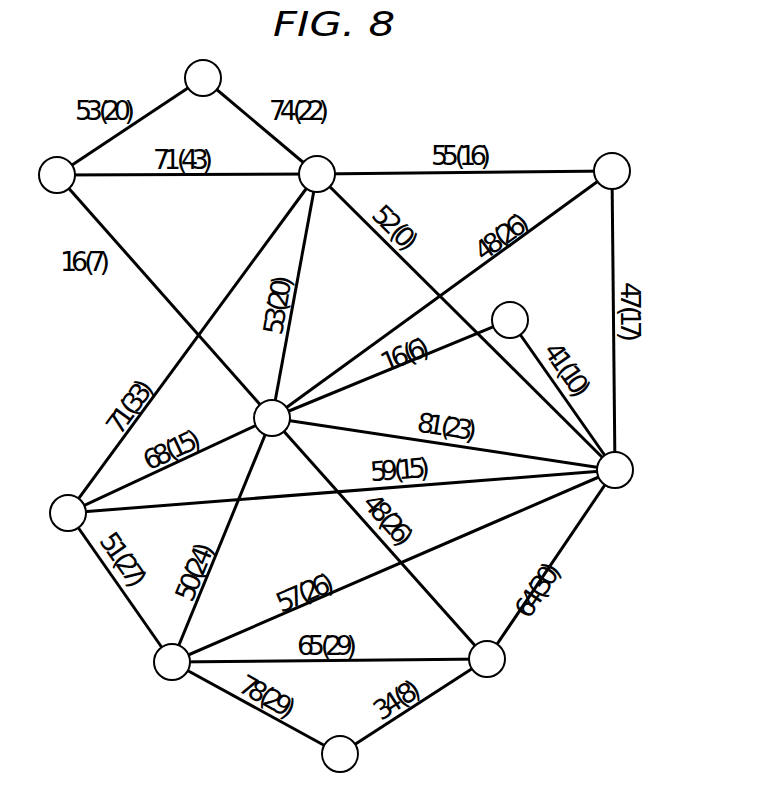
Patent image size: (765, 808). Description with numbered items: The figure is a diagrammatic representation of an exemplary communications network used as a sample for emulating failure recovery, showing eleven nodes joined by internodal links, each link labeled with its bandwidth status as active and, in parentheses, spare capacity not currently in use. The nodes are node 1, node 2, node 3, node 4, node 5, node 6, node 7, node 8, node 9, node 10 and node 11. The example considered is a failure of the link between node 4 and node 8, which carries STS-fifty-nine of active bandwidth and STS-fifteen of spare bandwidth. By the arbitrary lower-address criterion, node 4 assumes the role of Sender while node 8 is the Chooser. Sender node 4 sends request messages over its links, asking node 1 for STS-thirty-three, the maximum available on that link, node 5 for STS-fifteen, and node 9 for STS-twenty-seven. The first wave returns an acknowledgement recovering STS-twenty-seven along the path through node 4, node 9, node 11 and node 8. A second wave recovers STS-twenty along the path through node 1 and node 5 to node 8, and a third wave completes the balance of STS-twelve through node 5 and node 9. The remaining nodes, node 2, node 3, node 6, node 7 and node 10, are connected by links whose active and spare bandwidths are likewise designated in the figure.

The node 1 is at (317, 174).
The node 2 is at (203, 78).
The node 3 is at (57, 175).
The node 4 is at (68, 513).
The node 5 is at (272, 418).
The node 6 is at (612, 171).
The node 7 is at (510, 320).
The node 8 is at (615, 470).
The node 9 is at (172, 662).
The node 10 is at (340, 754).
The node 11 is at (487, 659).